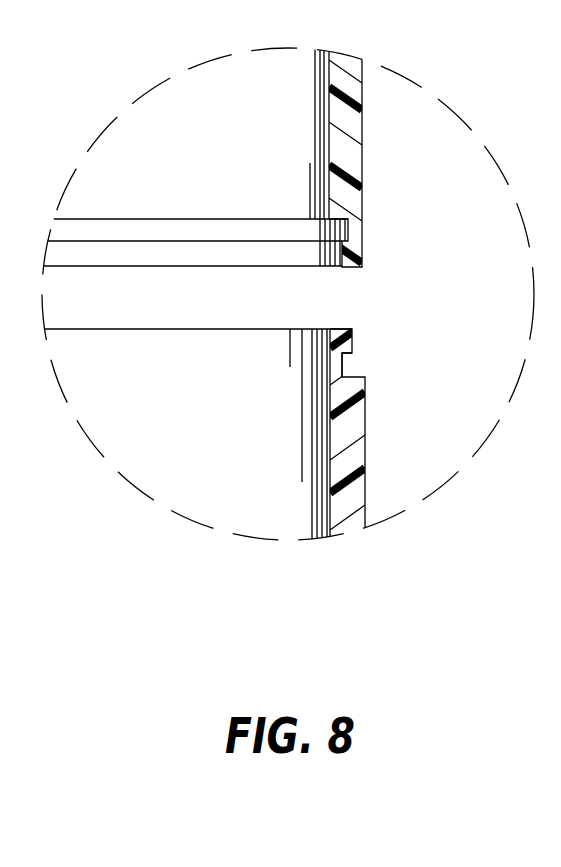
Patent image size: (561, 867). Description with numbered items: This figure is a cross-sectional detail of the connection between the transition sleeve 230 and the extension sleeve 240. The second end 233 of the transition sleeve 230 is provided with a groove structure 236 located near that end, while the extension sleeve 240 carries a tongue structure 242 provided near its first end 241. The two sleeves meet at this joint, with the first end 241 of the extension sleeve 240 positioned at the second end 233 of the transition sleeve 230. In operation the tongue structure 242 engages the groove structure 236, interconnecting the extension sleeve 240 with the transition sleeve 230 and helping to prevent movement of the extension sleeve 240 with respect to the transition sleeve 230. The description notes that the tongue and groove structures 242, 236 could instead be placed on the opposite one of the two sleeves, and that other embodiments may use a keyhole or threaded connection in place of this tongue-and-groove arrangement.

The transition sleeve 230 is at (362, 132).
The groove structure 236 is at (349, 232).
The second end 233 is at (347, 268).
The first end 241 is at (90, 329).
The tongue structure 242 is at (345, 366).
The extension sleeve 240 is at (373, 448).